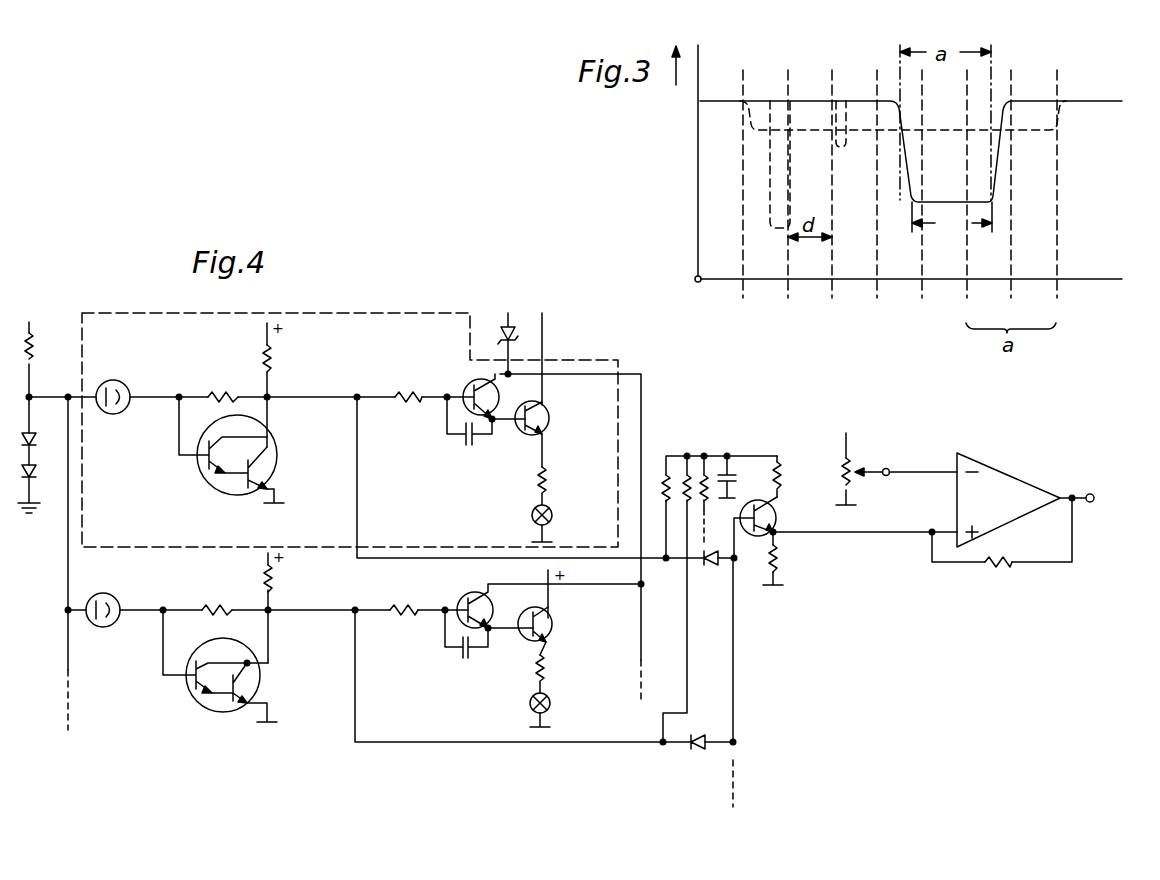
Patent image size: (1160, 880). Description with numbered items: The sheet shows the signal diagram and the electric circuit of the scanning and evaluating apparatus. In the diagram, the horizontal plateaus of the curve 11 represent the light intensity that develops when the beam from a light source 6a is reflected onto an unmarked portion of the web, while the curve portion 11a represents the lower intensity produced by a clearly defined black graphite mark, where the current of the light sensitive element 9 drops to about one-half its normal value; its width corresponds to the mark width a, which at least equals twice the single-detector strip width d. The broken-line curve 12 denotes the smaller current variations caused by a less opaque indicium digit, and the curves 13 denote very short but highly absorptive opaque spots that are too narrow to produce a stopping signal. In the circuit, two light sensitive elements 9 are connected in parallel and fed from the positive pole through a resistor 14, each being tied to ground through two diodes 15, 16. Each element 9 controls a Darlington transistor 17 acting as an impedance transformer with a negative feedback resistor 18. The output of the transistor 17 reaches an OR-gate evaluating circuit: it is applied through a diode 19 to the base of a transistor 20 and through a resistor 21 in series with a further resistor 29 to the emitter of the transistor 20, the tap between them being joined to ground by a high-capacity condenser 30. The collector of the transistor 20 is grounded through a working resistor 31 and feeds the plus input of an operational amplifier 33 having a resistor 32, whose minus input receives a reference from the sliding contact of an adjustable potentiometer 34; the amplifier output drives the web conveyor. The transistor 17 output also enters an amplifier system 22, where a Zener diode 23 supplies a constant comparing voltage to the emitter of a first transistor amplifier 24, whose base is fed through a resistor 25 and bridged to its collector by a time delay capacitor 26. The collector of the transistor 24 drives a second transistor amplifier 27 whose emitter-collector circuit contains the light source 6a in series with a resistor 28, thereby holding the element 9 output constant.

In FIG. 3, the curve 11 is at (1110, 101).
In FIG. 3, the curve portion 11a is at (945, 226).
In FIG. 3, the broken-line curve 12 is at (1047, 130).
In FIG. 3, the curves 13 is at (790, 108).
In FIG. 4, the resistor 14 is at (36, 352).
In FIG. 4, the diode 15 is at (50, 430).
In FIG. 4, the diode 16 is at (36, 472).
In FIG. 4, the light sensitive element 9 is at (119, 381).
In FIG. 4, the transistor 17 is at (200, 480).
In FIG. 4, the negative feedback resistor 18 is at (214, 392).
In FIG. 4, the diode 19 is at (710, 570).
In FIG. 4, the transistor 20 is at (760, 506).
In FIG. 4, the resistor 21 is at (662, 470).
In FIG. 4, the amplifier system 22 is at (517, 307).
In FIG. 4, the Zener diode 23 is at (522, 345).
In FIG. 4, the first transistor amplifier 24 is at (465, 385).
In FIG. 4, the resistor 25 is at (409, 404).
In FIG. 4, the time delay capacitor 26 is at (464, 442).
In FIG. 4, the second transistor amplifier 27 is at (547, 428).
In FIG. 4, the resistor 28 is at (536, 481).
In FIG. 4, the light source 6a is at (553, 511).
In FIG. 4, the further resistor 29 is at (783, 469).
In FIG. 4, the high-capacity condenser 30 is at (728, 470).
In FIG. 4, the working resistor 31 is at (778, 564).
In FIG. 4, the resistor 32 is at (996, 570).
In FIG. 4, the operational amplifier 33 is at (1002, 482).
In FIG. 4, the adjustable potentiometer 34 is at (840, 478).